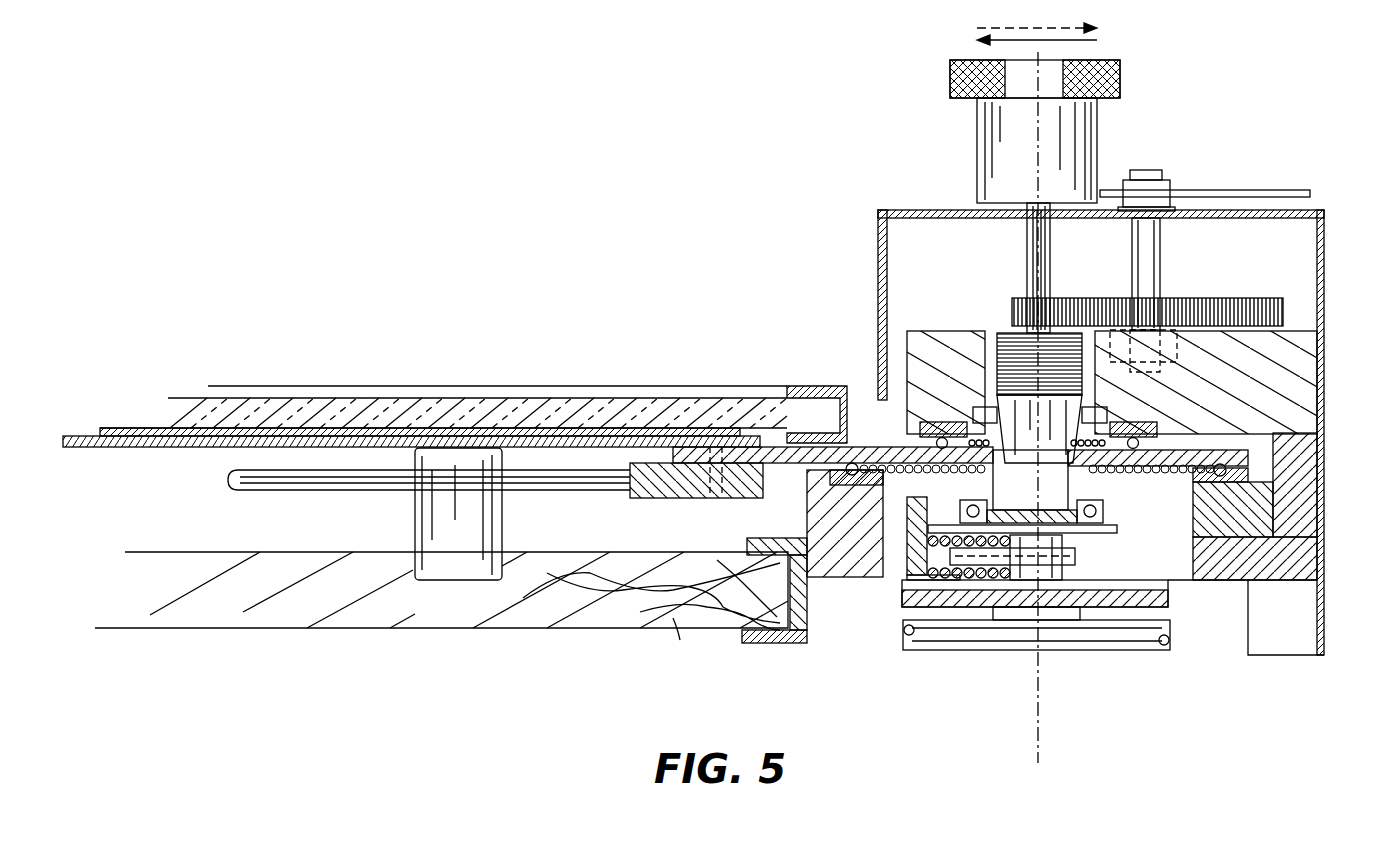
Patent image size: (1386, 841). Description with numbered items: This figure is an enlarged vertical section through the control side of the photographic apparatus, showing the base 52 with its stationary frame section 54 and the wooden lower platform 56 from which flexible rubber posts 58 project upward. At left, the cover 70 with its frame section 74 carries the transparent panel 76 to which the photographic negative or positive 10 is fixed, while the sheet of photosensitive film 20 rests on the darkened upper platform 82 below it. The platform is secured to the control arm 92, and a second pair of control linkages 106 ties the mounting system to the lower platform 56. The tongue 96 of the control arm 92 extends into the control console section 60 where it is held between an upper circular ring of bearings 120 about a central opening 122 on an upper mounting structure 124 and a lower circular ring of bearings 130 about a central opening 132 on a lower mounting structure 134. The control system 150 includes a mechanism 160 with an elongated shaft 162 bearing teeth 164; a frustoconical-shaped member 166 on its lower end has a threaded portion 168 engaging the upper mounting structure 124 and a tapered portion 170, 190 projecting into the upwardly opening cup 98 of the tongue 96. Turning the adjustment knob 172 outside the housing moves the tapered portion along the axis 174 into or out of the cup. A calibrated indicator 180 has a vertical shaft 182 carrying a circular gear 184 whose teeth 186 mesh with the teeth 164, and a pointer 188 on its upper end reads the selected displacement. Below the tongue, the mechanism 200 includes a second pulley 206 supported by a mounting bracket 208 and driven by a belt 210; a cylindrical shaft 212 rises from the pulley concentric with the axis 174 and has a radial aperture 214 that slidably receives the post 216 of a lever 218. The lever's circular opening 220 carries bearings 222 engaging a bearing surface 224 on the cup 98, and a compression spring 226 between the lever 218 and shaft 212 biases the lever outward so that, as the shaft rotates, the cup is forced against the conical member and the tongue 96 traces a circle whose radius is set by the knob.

The photographic negative or positive 10 is at (411, 439).
The photosensitive film 20 is at (385, 441).
The base 52 is at (790, 609).
The frame section 54 is at (797, 644).
The lower platform 56 is at (682, 626).
The post 58 is at (475, 568).
The control console section 60 is at (1312, 214).
The cover 70 is at (780, 385).
The frame section 74 is at (550, 387).
The transparent panel 76 is at (500, 412).
The upper platform 82 is at (330, 436).
The control arm 92 is at (690, 455).
The tongue 96 is at (905, 452).
The cup 98 is at (1068, 480).
The second pair of control linkages 106 is at (250, 489).
The upper circular ring of bearings 120 is at (1150, 433).
The central opening 122 is at (1105, 428).
The upper mounting structure 124 is at (1305, 383).
The lower circular ring of bearings 130 is at (1270, 523).
The central opening 132 is at (1190, 483).
The lower mounting structure 134 is at (808, 519).
The control system 150 is at (1300, 309).
The mechanism 160 is at (964, 333).
The shaft 162 is at (1027, 240).
The teeth 164 is at (1043, 230).
The frustoconical-shaped member 166 is at (994, 341).
The threaded portion 168 is at (1015, 341).
The tapered portion 170 is at (1018, 420).
The adjustment knob 172 is at (1092, 134).
The axis 174 is at (1040, 690).
The calibrated indicator 180 is at (1202, 243).
The shaft 182 is at (1162, 236).
The circular gear 184 is at (1160, 300).
The teeth 186 is at (1122, 300).
The pointer 188 is at (1175, 192).
The tapered portion 190 is at (1258, 212).
The mechanism 200 is at (1075, 609).
The second pulley 206 is at (975, 652).
The mounting bracket 208 is at (1168, 601).
The belt 210 is at (908, 646).
The cylindrical shaft 212 is at (1062, 566).
The aperture 214 is at (1062, 553).
The post 216 is at (928, 562).
The lever 218 is at (912, 545).
The circular opening 220 is at (1095, 482).
The bearings 222 is at (1100, 523).
The bearing surface 224 is at (985, 508).
The compression spring 226 is at (905, 597).